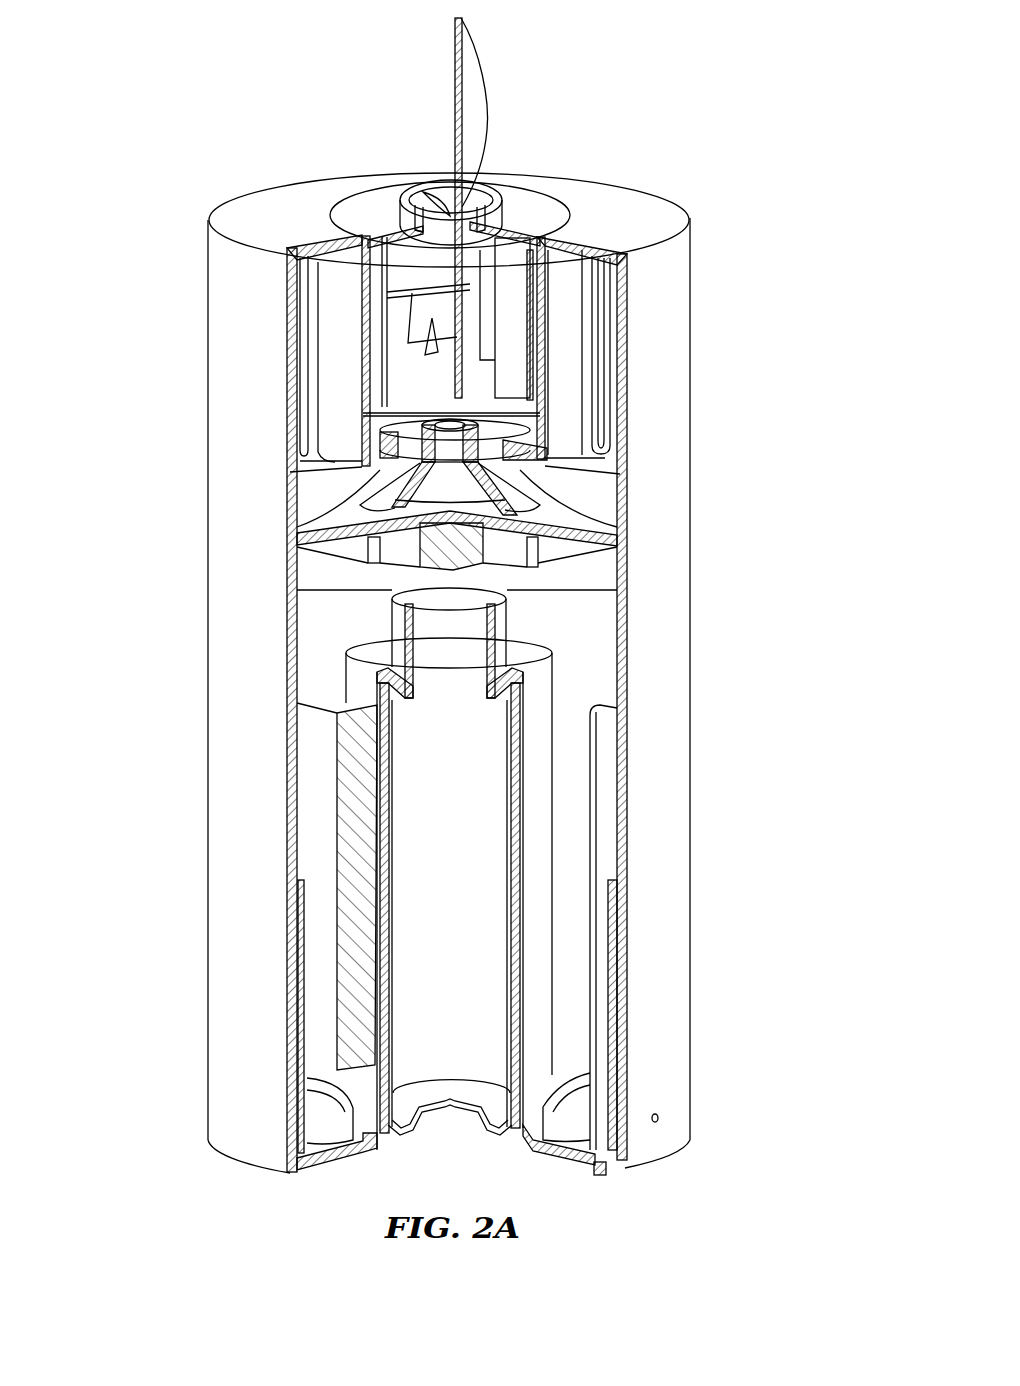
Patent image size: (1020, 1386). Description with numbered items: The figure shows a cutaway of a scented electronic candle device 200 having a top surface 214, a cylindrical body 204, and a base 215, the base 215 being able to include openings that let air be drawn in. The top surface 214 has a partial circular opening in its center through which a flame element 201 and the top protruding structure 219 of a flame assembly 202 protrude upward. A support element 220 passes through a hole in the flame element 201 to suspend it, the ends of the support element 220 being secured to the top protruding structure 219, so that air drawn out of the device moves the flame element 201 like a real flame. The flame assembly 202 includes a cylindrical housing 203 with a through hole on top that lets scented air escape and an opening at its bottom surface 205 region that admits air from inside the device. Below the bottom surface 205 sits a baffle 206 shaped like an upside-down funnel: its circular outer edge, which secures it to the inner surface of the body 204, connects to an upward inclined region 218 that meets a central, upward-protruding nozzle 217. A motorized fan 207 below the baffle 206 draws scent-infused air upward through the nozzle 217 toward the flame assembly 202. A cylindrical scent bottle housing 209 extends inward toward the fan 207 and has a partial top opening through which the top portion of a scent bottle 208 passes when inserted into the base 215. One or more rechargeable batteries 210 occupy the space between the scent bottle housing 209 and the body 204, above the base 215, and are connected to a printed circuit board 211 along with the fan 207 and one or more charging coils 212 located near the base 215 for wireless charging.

The scented electronic candle device 200 is at (523, 636).
The flame element 201 is at (490, 100).
The flame assembly 202 is at (515, 222).
The cylindrical housing 203 is at (355, 348).
The body 204 is at (210, 432).
The bottom surface 205 is at (378, 462).
The baffle 206 is at (590, 512).
The motorized fan 207 is at (330, 560).
The scent bottle 208 is at (500, 622).
The cylindrical scent bottle housing 209 is at (370, 686).
The rechargeable batteries 210 is at (330, 825).
The printed circuit board 211 is at (598, 768).
The charging coils 212 is at (325, 1113).
The top surface 214 is at (268, 220).
The base 215 is at (570, 1163).
The nozzle 217 is at (480, 437).
The inclined region 218 is at (505, 490).
The top protruding structure 219 is at (405, 178).
The support element 220 is at (440, 200).